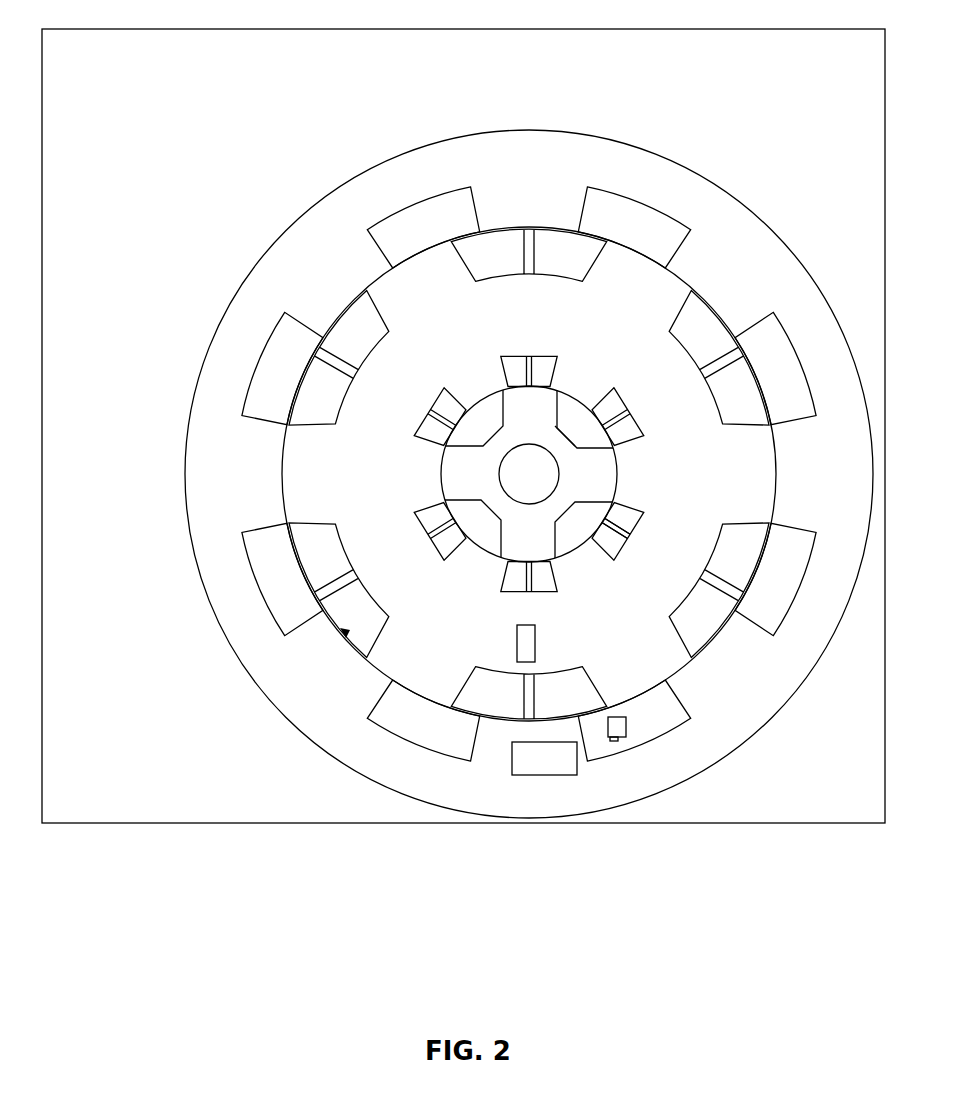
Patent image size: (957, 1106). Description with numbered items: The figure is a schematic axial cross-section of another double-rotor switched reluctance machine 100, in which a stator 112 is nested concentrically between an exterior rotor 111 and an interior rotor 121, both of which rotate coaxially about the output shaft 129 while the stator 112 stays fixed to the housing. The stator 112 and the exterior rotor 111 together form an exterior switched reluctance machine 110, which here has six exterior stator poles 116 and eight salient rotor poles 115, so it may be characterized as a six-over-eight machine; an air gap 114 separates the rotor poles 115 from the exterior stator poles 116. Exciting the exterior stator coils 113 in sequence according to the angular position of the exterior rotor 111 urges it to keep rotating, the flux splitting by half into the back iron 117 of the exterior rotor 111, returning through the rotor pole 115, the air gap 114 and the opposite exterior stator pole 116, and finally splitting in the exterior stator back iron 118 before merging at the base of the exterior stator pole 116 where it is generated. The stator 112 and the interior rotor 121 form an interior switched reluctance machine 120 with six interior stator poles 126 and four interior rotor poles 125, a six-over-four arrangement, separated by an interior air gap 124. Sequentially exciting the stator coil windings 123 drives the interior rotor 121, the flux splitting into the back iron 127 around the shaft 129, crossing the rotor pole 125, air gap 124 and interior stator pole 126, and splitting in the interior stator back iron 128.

The double-rotor switched reluctance machine 100 is at (342, 100).
The exterior switched reluctance machine 110 is at (218, 463).
The exterior rotor 111 is at (772, 255).
The stator 112 is at (658, 472).
The exterior stator coils 113 is at (358, 598).
The air gap 114 is at (364, 268).
The rotor poles 115 is at (377, 692).
The exterior stator poles 116 is at (397, 625).
The back iron 117 is at (637, 768).
The exterior stator back iron 118 is at (490, 305).
The interior switched reluctance machine 120 is at (588, 348).
The interior rotor 121 is at (552, 438).
The stator coil windings 123 is at (607, 537).
The air gap 124 is at (425, 458).
The rotor poles 125 is at (555, 542).
The interior stator poles 126 is at (472, 557).
The back iron 127 is at (557, 447).
The interior stator back iron 128 is at (642, 557).
The output shaft 129 is at (518, 466).